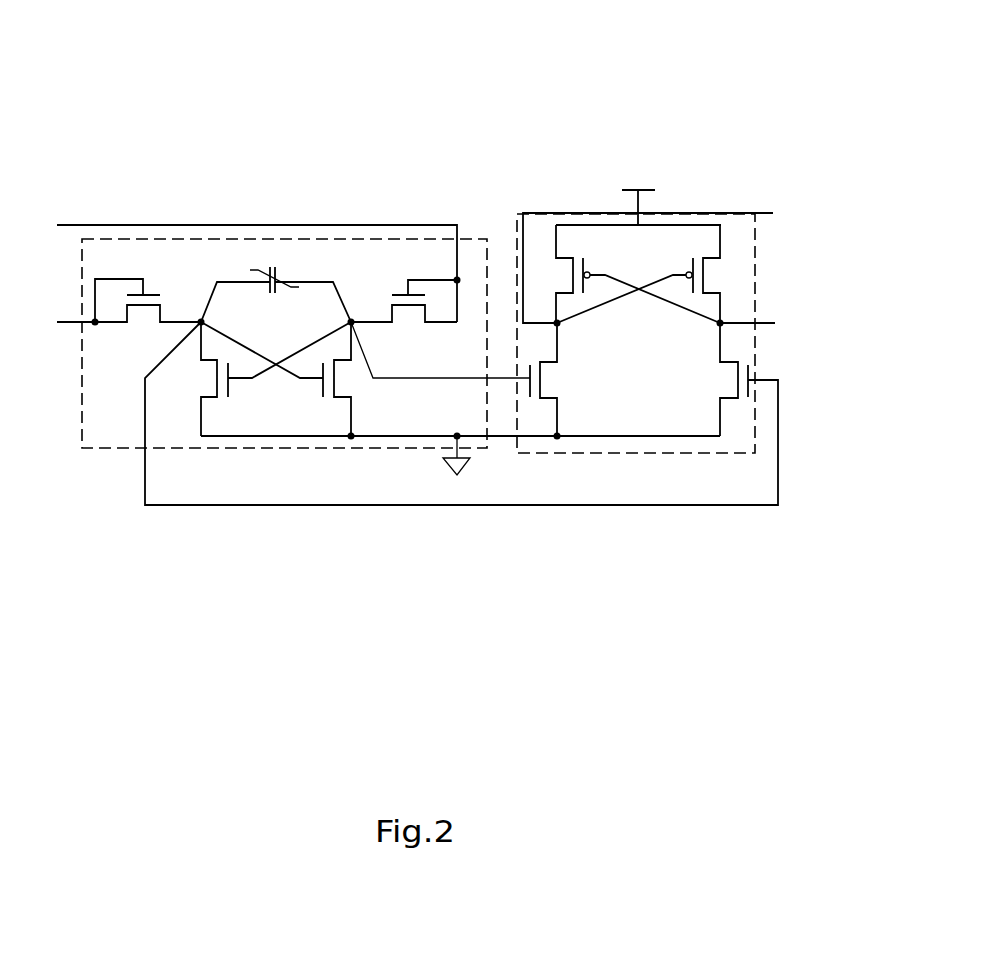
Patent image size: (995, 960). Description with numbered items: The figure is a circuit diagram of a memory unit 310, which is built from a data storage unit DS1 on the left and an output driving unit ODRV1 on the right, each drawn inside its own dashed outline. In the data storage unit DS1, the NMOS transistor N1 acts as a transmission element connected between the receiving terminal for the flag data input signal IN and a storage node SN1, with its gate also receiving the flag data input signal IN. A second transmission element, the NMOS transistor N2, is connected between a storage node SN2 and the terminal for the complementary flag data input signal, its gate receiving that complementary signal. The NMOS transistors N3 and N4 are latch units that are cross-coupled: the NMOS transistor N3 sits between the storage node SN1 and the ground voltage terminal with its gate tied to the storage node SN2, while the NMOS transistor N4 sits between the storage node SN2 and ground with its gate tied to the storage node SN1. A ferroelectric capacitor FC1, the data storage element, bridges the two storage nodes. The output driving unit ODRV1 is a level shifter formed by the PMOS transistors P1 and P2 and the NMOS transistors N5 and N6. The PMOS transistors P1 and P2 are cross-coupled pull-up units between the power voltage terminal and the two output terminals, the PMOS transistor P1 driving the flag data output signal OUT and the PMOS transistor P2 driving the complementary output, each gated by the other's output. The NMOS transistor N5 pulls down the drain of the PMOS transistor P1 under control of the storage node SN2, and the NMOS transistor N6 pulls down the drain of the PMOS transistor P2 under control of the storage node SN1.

The memory unit 310 is at (601, 68).
The data storage unit DS1 is at (487, 239).
The output driving unit ODRV1 is at (755, 233).
The flag data input signal IN is at (78, 336).
The NMOS transistor N1 is at (148, 310).
The NMOS transistor N2 is at (406, 309).
The NMOS transistor N3 is at (267, 379).
The NMOS transistor N4 is at (281, 379).
The NMOS transistor N5 is at (550, 379).
The NMOS transistor N6 is at (742, 379).
The PMOS transistor P1 is at (631, 276).
The PMOS transistor P2 is at (645, 276).
The ferroelectric capacitor FC1 is at (276, 281).
The storage node SN1 is at (461, 427).
The storage node SN2 is at (440, 350).
The flag data output signal OUT is at (648, 229).